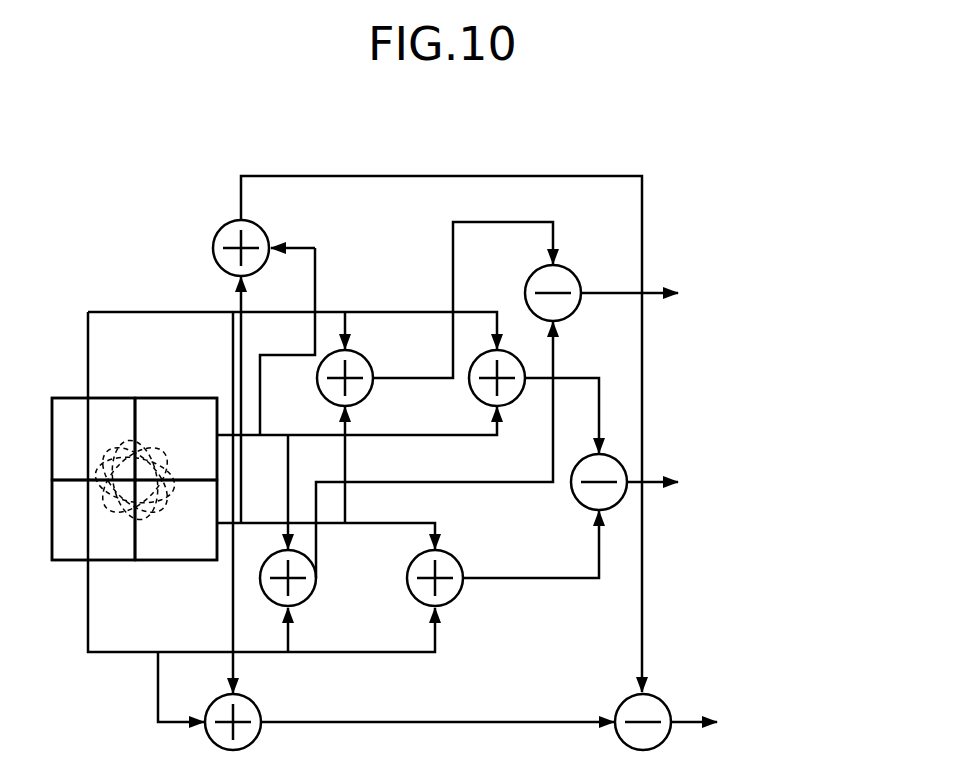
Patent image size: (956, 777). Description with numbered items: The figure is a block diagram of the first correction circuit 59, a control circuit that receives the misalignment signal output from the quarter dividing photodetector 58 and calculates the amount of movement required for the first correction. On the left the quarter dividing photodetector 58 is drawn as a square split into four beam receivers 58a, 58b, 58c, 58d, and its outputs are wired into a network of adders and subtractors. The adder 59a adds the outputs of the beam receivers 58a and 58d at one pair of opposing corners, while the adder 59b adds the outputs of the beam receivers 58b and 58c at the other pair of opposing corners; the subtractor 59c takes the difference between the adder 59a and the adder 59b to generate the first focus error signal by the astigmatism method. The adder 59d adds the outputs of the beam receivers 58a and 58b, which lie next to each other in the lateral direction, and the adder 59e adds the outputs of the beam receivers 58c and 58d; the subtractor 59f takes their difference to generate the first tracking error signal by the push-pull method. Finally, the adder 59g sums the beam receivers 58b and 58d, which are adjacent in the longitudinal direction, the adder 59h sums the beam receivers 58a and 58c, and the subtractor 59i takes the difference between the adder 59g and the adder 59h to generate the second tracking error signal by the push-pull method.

The quarter dividing photodetector 58 is at (50, 443).
The beam receiver 58a is at (58, 398).
The beam receiver 58b is at (184, 398).
The beam receiver 58c is at (66, 562).
The beam receiver 58d is at (170, 562).
The first correction circuit 59 is at (411, 150).
The adder 59a is at (374, 370).
The adder 59b is at (316, 584).
The subtractor 59c is at (576, 278).
The adder 59d is at (504, 408).
The adder 59e is at (463, 572).
The subtractor 59f is at (612, 510).
The adder 59g is at (213, 247).
The adder 59h is at (260, 708).
The subtractor 59i is at (618, 707).